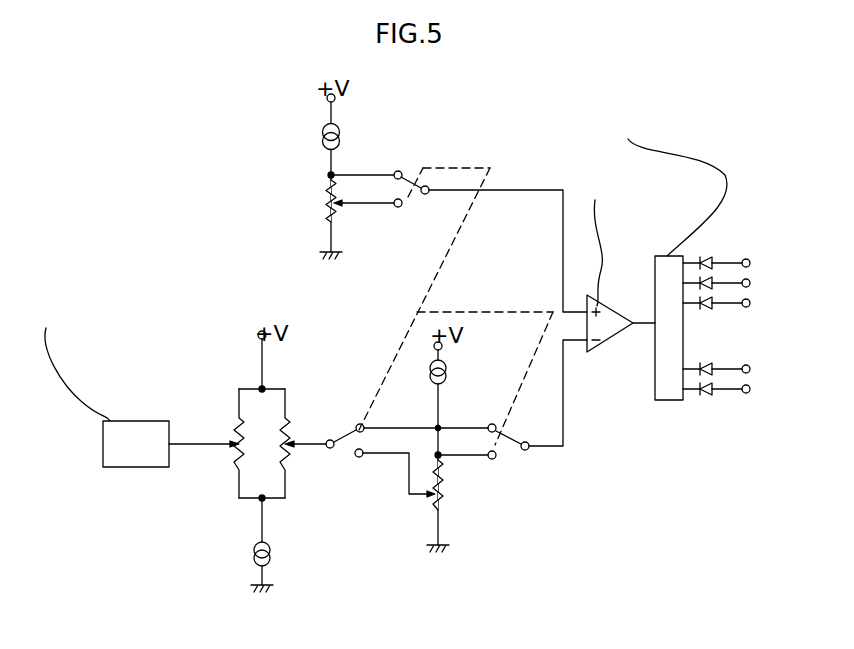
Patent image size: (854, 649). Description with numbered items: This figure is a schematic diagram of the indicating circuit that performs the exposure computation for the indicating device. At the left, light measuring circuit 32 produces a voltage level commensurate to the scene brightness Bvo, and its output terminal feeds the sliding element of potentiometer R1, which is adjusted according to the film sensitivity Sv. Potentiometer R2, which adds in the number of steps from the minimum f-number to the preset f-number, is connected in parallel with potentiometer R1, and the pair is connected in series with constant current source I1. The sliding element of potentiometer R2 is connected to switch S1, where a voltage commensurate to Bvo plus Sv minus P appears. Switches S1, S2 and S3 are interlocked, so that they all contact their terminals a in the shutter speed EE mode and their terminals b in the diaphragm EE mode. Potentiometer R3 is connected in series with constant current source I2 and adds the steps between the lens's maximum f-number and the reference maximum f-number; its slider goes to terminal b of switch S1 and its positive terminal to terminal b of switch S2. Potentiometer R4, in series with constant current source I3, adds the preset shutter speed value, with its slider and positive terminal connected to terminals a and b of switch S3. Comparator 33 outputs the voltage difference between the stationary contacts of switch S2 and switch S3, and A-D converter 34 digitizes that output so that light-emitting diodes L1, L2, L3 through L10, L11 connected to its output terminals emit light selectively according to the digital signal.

The light measuring circuit 32 is at (137, 468).
The comparator 33 is at (593, 350).
The A-D converter 34 is at (665, 400).
The potentiometer R1 is at (236, 453).
The potentiometer R2 is at (290, 440).
The potentiometer R3 is at (440, 490).
The potentiometer R4 is at (325, 200).
The constant current source I1 is at (282, 541).
The constant current source I2 is at (444, 362).
The constant current source I3 is at (325, 125).
The switch S1 is at (345, 437).
The switch S2 is at (508, 439).
The switch S3 is at (417, 185).
The light-emitting diode L1 is at (710, 258).
The light-emitting diode L2 is at (712, 279).
The light-emitting diode L3 is at (710, 306).
The light-emitting diode L10 is at (712, 366).
The light-emitting diode L11 is at (710, 392).